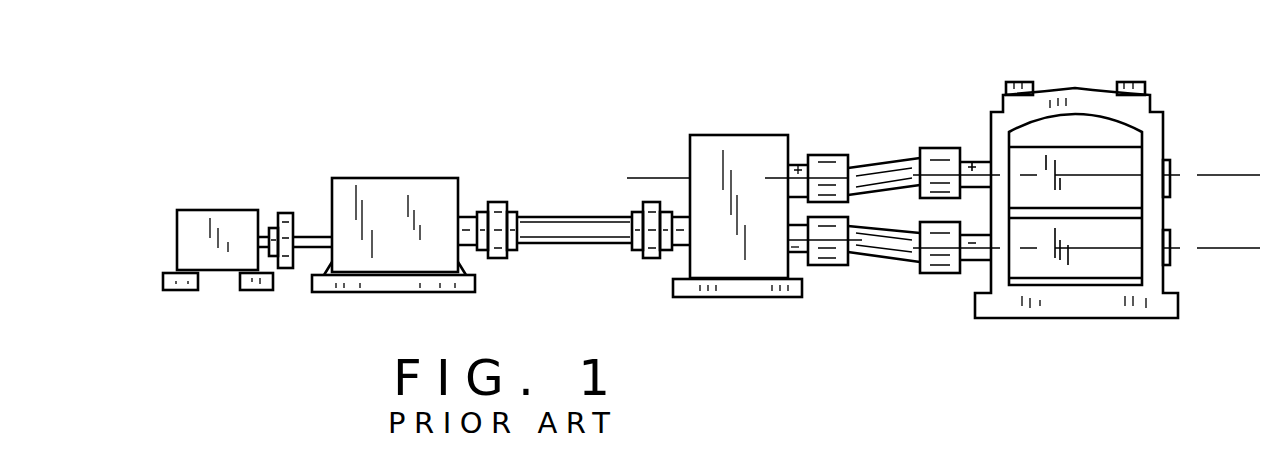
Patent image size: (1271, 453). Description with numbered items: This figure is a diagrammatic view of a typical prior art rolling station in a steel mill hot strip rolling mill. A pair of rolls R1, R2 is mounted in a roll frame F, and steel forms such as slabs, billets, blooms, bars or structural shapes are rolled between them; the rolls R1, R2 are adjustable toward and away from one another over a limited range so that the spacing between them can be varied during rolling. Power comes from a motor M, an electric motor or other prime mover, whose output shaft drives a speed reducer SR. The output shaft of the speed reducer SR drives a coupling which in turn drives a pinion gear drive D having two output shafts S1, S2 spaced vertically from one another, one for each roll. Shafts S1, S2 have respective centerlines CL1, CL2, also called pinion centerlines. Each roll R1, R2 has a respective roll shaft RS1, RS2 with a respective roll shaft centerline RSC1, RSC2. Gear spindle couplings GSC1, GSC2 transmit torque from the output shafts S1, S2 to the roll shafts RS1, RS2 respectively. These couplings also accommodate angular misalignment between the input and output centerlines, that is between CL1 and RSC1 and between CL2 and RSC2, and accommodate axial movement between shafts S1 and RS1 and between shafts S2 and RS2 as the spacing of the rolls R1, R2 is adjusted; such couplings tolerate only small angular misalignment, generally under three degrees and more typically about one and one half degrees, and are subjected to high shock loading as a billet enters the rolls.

The motor M is at (226, 209).
The speed reducer SR is at (420, 178).
The drive / pinion stand D is at (709, 134).
The centerline CL1 is at (665, 177).
The centerline CL2 is at (820, 242).
The output shaft S1 is at (798, 170).
The output shaft S2 is at (795, 253).
The gear spindle coupling GSC1 is at (940, 132).
The gear spindle coupling GSC2 is at (948, 280).
The roll shaft RS1 is at (970, 165).
The roll shaft RS2 is at (975, 242).
The roll frame F is at (1163, 113).
The roll R1 is at (1077, 188).
The roll R2 is at (1087, 253).
The roll shaft centerline RSC1 is at (1176, 175).
The roll shaft centerline RSC2 is at (1215, 233).